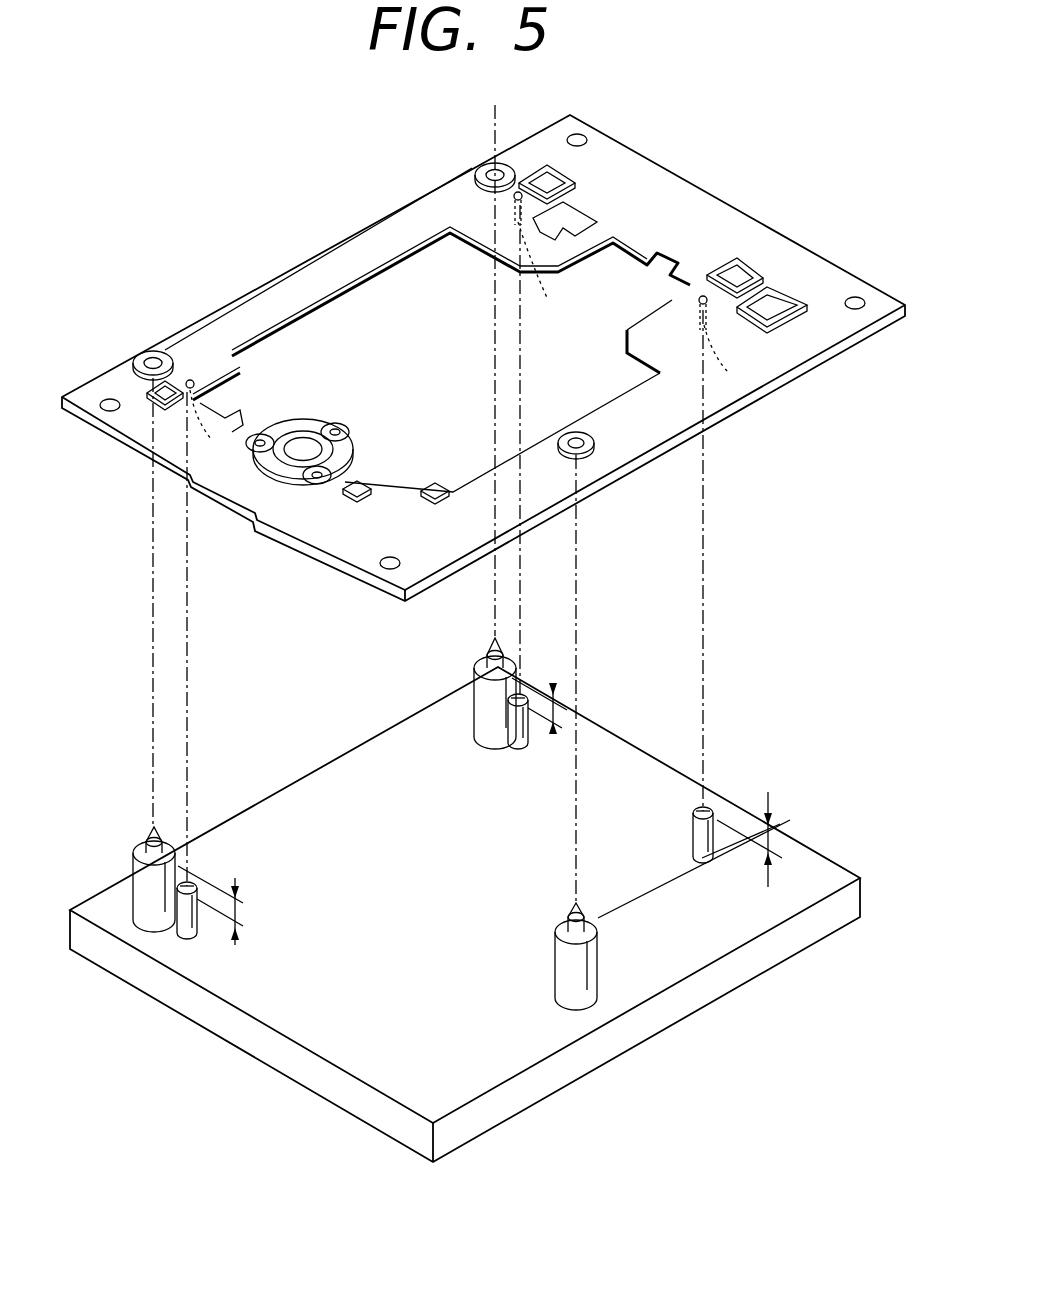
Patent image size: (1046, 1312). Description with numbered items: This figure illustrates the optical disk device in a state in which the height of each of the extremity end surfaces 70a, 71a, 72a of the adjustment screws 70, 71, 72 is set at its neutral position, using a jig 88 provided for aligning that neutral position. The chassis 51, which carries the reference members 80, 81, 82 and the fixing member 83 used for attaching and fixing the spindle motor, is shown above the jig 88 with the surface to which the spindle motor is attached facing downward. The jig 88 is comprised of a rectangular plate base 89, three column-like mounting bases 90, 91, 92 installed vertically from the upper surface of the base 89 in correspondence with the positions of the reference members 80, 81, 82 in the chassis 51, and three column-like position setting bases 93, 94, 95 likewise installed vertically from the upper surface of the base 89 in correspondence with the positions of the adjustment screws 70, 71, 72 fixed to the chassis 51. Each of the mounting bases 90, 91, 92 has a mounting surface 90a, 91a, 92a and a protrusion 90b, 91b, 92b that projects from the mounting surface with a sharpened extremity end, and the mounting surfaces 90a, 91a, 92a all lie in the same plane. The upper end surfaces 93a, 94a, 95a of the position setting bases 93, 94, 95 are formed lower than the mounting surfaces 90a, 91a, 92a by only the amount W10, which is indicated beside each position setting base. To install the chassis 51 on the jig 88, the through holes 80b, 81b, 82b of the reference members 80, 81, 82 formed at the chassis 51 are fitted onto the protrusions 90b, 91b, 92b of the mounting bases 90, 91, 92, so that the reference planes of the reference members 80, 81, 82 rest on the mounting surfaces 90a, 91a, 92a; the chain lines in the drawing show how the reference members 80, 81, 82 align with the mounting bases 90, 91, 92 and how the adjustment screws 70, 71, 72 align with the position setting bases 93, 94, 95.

The chassis 51 is at (778, 226).
The adjustment screw 70 is at (692, 300).
The extremity end surface 70a is at (727, 364).
The adjustment screw 71 is at (200, 374).
The extremity end surface 71a is at (214, 427).
The adjustment screw 72 is at (513, 197).
The extremity end surface 72a is at (551, 277).
The reference member 80 is at (588, 430).
The through hole 80b is at (572, 440).
The reference member 81 is at (130, 352).
The through hole 81b is at (156, 357).
The reference member 82 is at (472, 175).
The through hole 82b is at (490, 165).
The fixing member 83 is at (332, 420).
The jig 88 is at (655, 1018).
The base 89 is at (823, 873).
The mounting base 90 is at (562, 977).
The mounting surface 90a is at (566, 930).
The protrusion 90b is at (570, 912).
The mounting base 91 is at (138, 891).
The mounting surface 91a is at (146, 845).
The protrusion 91b is at (150, 830).
The mounting base 92 is at (478, 717).
The mounting surface 92a is at (487, 667).
The protrusion 92b is at (490, 648).
The position setting base 93 is at (694, 838).
The upper end surface 93a is at (706, 810).
The position setting base 94 is at (183, 936).
The upper end surface 94a is at (189, 885).
The position setting base 95 is at (505, 746).
The upper end surface 95a is at (522, 698).
The height difference W10 is at (243, 923).